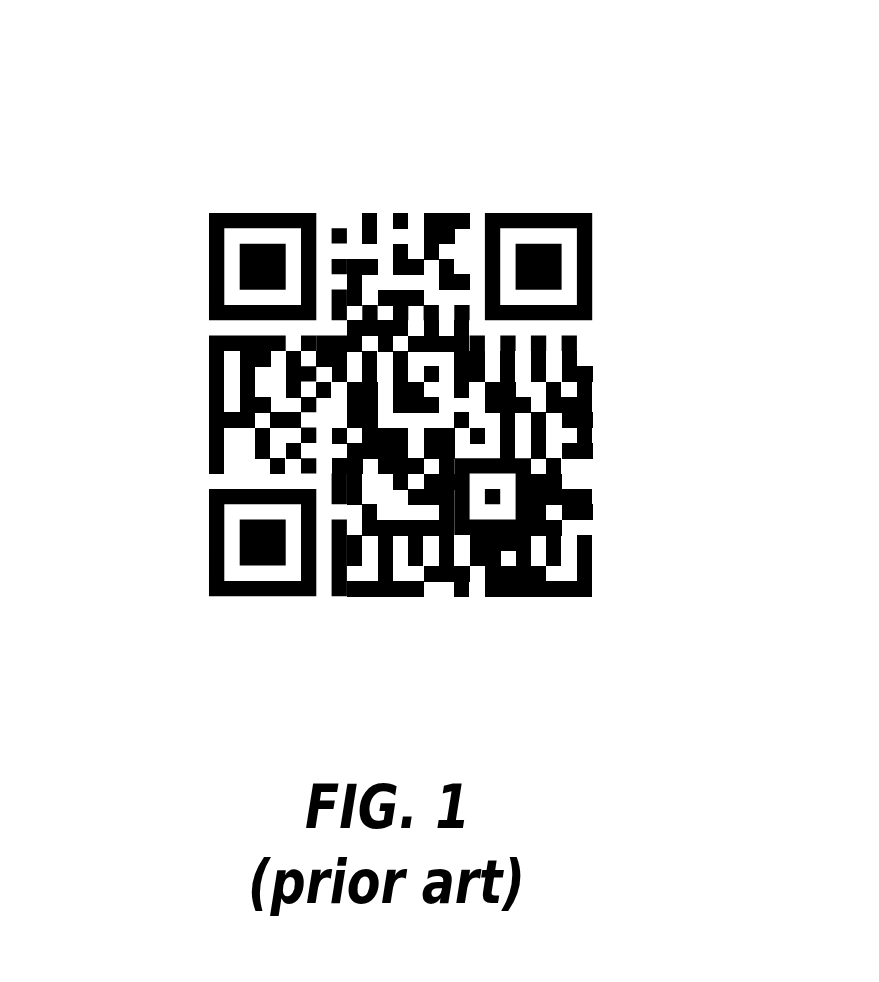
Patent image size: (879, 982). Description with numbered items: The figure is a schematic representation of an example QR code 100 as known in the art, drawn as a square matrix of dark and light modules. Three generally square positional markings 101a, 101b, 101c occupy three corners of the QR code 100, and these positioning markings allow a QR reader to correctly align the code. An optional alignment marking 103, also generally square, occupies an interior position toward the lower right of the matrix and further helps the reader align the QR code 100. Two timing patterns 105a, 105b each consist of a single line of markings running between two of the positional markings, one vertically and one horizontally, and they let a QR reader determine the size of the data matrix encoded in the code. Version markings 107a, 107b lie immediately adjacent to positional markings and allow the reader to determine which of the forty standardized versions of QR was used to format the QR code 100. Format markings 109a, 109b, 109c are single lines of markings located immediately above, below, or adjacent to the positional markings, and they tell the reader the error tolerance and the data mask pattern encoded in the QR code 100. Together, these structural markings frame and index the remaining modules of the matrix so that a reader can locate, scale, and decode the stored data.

The QR code 100 is at (388, 128).
The positional marking 101a is at (237, 270).
The positional marking 101b is at (230, 552).
The positional marking 101c is at (567, 250).
The alignment marking 103 is at (494, 480).
The timing pattern 105a is at (309, 386).
The timing pattern 105b is at (447, 313).
The version marking 107a is at (237, 480).
The version marking 107b is at (478, 243).
The format marking 109a is at (210, 340).
The format marking 109b is at (587, 337).
The format marking 109c is at (340, 600).